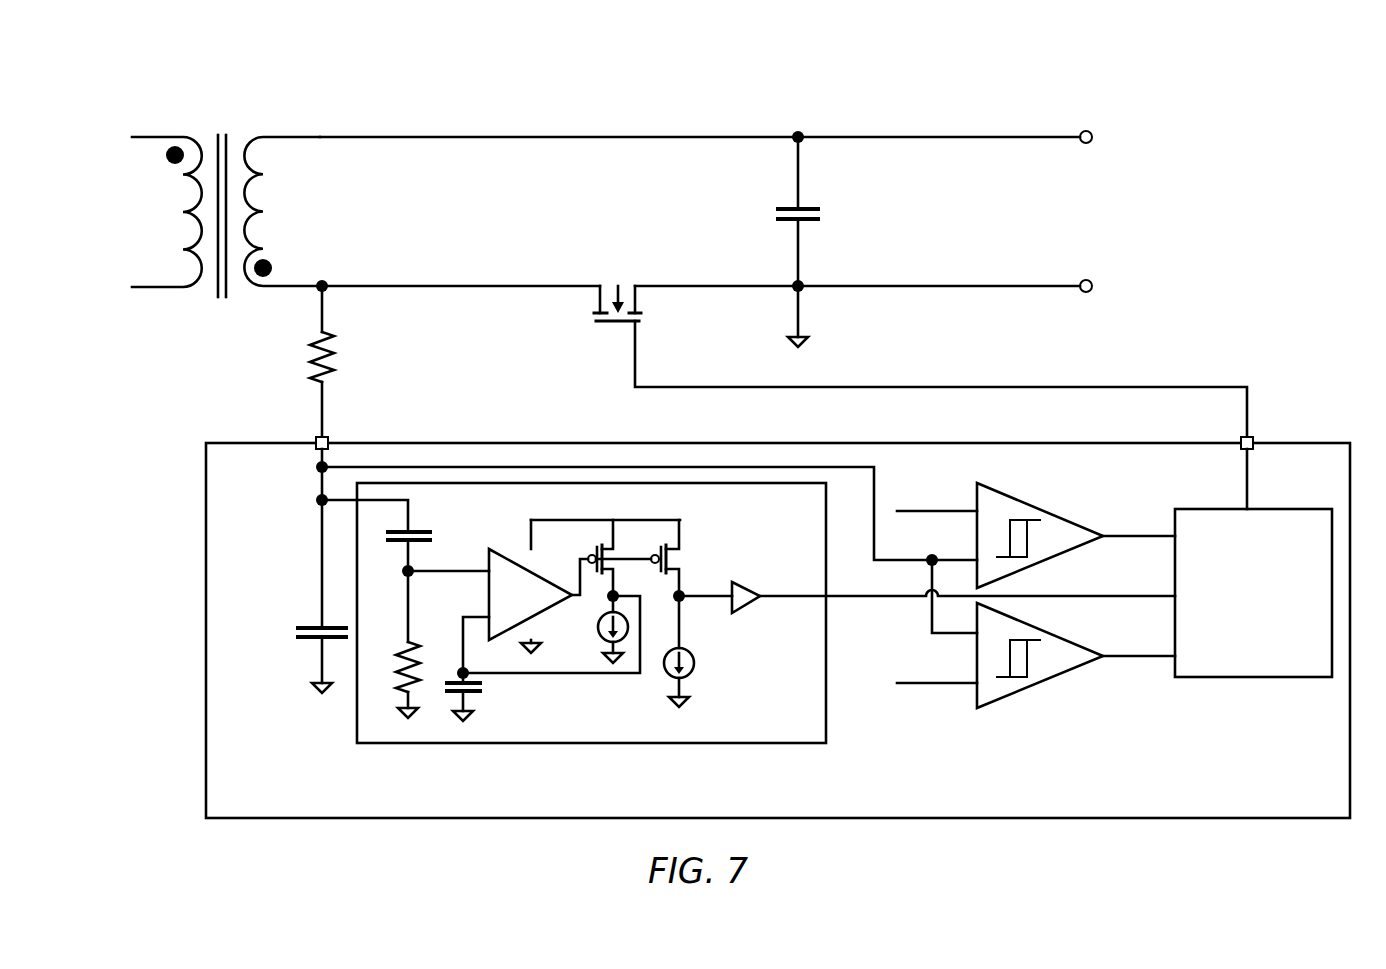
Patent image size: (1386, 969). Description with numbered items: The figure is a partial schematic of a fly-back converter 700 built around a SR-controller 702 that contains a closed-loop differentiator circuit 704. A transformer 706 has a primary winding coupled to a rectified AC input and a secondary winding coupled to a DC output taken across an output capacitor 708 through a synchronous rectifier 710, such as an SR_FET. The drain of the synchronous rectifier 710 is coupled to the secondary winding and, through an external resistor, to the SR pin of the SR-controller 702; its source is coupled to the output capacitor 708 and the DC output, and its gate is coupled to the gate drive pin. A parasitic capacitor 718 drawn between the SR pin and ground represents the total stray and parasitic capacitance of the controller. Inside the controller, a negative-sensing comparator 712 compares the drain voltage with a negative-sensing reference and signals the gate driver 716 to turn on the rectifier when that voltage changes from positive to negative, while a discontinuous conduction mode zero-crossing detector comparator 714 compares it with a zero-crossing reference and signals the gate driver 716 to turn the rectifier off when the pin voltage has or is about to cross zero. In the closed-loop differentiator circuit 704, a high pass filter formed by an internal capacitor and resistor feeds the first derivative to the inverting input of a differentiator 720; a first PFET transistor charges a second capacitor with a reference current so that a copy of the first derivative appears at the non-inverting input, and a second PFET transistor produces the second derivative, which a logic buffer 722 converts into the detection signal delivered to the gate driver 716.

The fly-back converter 700 is at (648, 32).
The SR-controller 702 is at (758, 789).
The closed-loop differentiator circuit 704 is at (608, 739).
The transformer 706 is at (250, 118).
The output capacitor 708 is at (788, 207).
The synchronous rectifier 710 is at (600, 271).
The negative-sensing comparator 712 is at (1055, 684).
The zero-crossing detector comparator 714 is at (1046, 508).
The gate driver 716 is at (1273, 651).
The parasitic capacitor 718 is at (310, 626).
The differentiator 720 is at (540, 607).
The logic buffer 722 is at (751, 580).